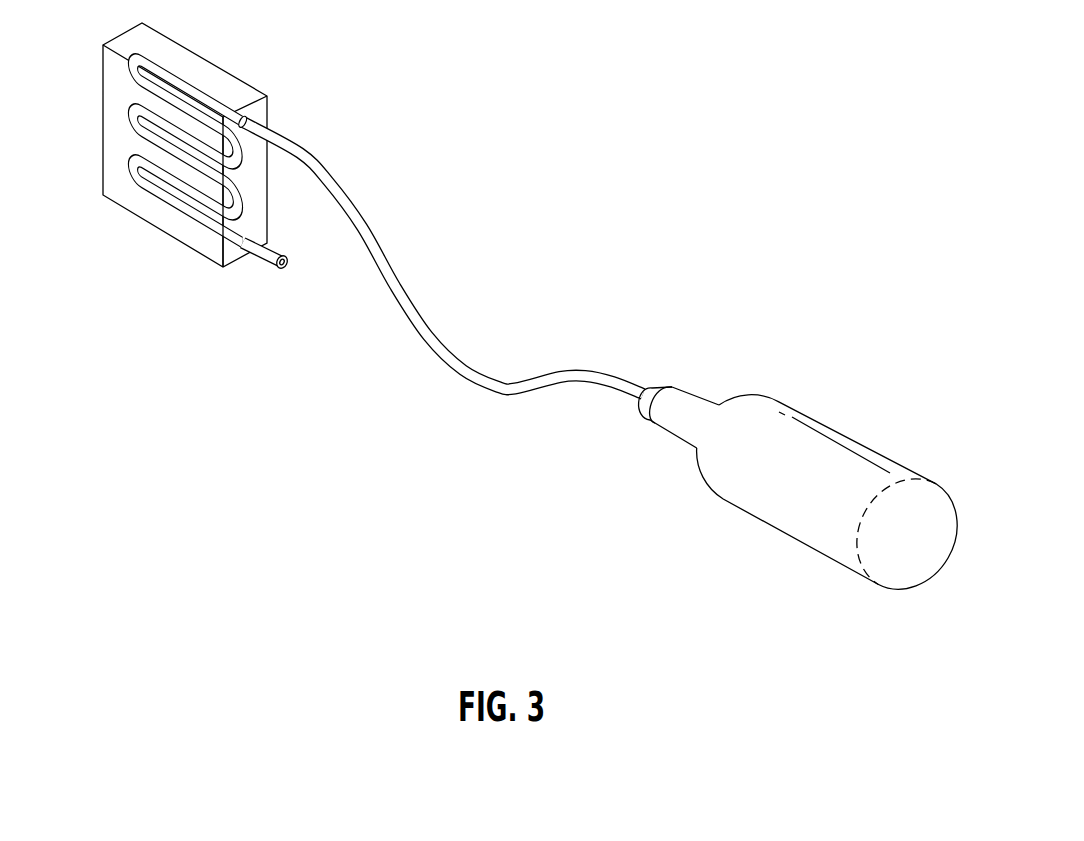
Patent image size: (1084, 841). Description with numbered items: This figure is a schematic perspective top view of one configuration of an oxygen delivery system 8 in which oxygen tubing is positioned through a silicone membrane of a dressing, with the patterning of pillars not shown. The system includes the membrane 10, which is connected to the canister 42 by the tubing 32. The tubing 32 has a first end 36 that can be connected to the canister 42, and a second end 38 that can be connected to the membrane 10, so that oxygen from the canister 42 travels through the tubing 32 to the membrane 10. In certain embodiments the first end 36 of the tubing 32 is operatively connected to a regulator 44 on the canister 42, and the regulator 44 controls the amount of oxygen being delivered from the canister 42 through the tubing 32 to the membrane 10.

The oxygen delivery system 8 is at (501, 306).
The membrane 10 is at (92, 184).
The tubing 32 is at (338, 174).
The first end 36 is at (646, 388).
The second end 38 is at (264, 117).
The canister 42 is at (763, 383).
The regulator 44 is at (673, 378).